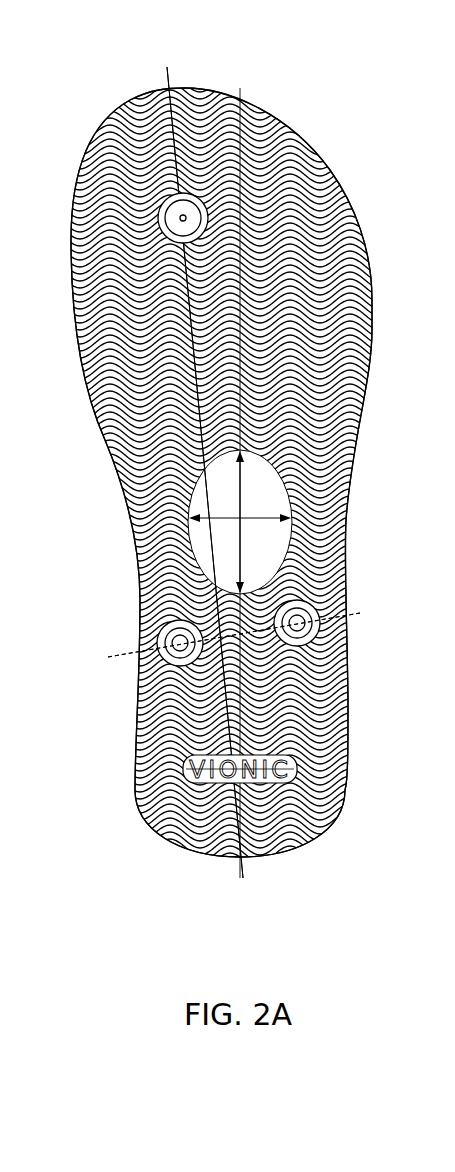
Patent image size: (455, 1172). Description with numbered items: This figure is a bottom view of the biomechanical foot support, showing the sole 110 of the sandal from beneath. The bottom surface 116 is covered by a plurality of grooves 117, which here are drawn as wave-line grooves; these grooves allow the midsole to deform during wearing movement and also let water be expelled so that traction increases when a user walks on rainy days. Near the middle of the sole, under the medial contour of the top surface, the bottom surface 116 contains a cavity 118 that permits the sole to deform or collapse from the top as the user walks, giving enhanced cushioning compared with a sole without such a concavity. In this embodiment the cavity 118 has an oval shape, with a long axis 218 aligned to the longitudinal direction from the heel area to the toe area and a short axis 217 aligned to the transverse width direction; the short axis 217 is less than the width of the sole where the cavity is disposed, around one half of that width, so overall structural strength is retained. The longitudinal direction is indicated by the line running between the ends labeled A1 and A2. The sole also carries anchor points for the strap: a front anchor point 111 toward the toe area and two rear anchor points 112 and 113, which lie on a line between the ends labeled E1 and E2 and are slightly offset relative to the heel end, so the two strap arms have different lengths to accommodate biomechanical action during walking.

The sole 110 is at (360, 795).
The front anchor point 111 is at (198, 222).
The rear anchor point 112 is at (157, 640).
The rear anchor point 113 is at (305, 624).
The bottom surface 116 is at (358, 362).
The grooves 117 is at (345, 468).
The cavity 118 is at (270, 495).
The short axis 217 is at (222, 518).
The long axis 218 is at (218, 594).
The longitudinal axis first end A1 is at (199, 456).
The longitudinal axis second end A2 is at (212, 485).
The strap anchor axis first end E1 is at (219, 643).
The strap anchor axis second end E2 is at (249, 625).